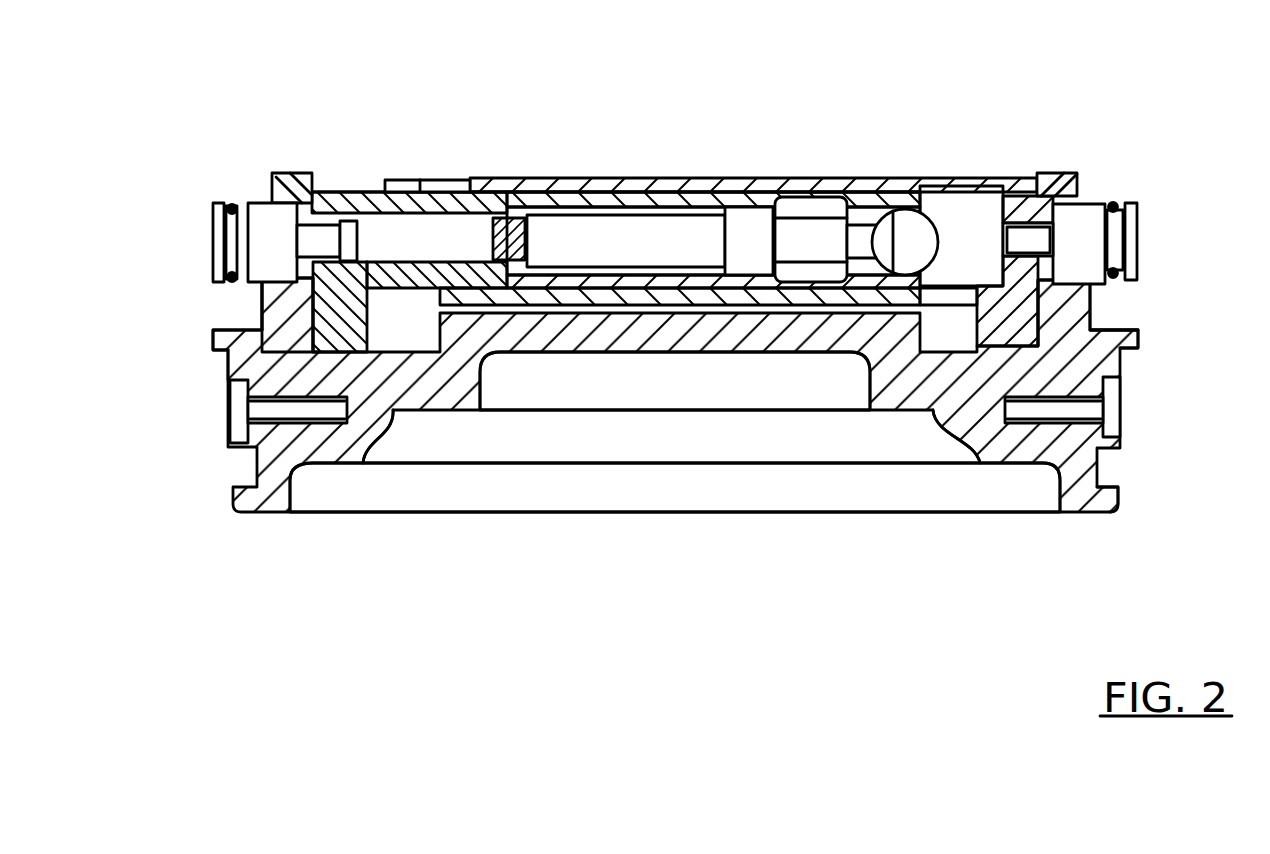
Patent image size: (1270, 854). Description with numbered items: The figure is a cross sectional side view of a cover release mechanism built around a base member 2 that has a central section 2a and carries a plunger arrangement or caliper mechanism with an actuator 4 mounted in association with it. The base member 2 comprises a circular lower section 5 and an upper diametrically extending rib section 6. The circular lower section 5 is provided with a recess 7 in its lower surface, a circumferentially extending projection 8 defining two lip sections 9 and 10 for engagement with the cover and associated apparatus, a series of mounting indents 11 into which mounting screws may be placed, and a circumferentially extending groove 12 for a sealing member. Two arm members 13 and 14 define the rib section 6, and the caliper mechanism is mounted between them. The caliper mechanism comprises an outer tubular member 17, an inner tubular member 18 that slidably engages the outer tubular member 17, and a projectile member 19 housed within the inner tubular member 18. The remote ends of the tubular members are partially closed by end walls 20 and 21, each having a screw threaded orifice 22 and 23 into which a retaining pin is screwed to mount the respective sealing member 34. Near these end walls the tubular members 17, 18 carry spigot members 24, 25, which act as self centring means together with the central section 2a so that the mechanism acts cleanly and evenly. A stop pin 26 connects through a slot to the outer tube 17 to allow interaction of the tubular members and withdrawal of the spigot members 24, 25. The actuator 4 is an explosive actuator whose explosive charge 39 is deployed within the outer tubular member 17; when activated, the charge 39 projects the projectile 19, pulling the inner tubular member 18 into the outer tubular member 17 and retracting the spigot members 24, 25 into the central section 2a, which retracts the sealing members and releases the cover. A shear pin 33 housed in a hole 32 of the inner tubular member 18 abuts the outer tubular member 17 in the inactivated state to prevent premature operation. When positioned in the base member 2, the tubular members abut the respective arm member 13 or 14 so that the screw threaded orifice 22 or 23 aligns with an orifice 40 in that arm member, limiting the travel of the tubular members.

The base member 2 is at (684, 336).
The central section 2a is at (556, 338).
The actuator 4 is at (828, 190).
The circular lower section 5 is at (346, 462).
The rib section 6 is at (1050, 190).
The recess 7 is at (925, 493).
The circumferentially extending projection 8 is at (212, 338).
The lip section 9 is at (263, 323).
The lip section 10 is at (228, 348).
The mounting indent 11 is at (227, 427).
The circumferentially extending groove 12 is at (1110, 474).
The arm member 13 is at (1060, 298).
The arm member 14 is at (293, 200).
The outer tubular member 17 is at (694, 178).
The inner tubular member 18 is at (310, 228).
The projectile member 19 is at (613, 237).
The end wall 20 is at (297, 262).
The end wall 21 is at (1137, 252).
The screw threaded orifice 22 is at (312, 237).
The screw threaded orifice 23 is at (1037, 243).
The spigot member 24 is at (327, 313).
The spigot member 25 is at (1012, 330).
The stop pin 26 is at (915, 237).
The hole 32 is at (473, 178).
The shear pin 33 is at (440, 178).
The sealing member 34 is at (217, 205).
The explosive charge 39 is at (790, 205).
The orifice 40 is at (1052, 214).